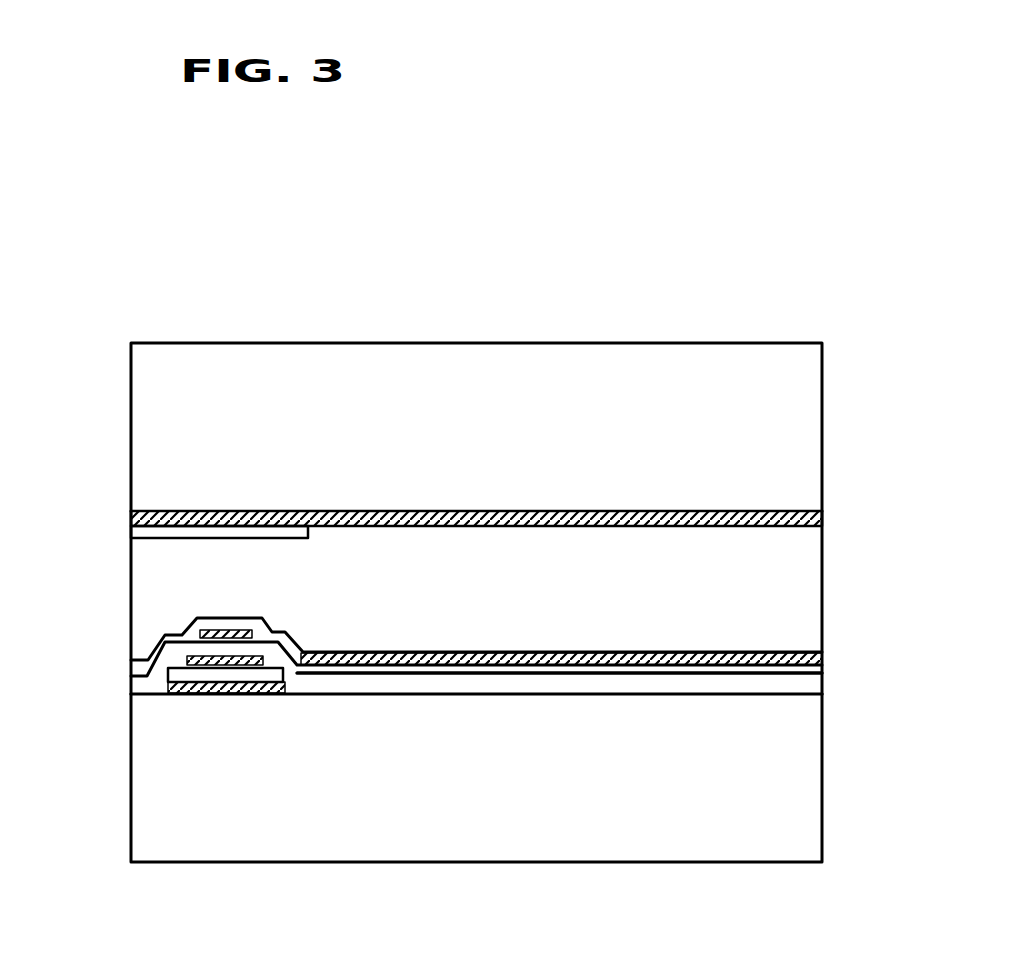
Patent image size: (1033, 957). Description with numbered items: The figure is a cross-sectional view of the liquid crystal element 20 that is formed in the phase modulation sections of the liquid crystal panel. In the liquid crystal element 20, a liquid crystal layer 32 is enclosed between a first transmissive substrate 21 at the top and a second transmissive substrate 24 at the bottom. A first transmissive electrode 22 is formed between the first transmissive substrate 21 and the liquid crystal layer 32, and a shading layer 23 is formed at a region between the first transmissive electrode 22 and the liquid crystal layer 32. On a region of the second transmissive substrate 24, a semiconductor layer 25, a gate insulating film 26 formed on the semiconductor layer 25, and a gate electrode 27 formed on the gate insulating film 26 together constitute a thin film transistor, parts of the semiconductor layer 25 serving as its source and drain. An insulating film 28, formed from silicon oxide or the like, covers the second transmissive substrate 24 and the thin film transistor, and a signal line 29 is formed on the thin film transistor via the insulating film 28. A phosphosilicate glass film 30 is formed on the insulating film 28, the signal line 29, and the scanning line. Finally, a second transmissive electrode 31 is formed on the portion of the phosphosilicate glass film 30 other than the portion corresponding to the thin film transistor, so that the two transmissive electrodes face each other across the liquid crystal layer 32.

The liquid crystal element 20 is at (231, 303).
The first transmissive substrate 21 is at (327, 362).
The first transmissive electrode 22 is at (768, 508).
The shading layer 23 is at (163, 538).
The second transmissive substrate 24 is at (227, 843).
The semiconductor layer 25 is at (188, 698).
The gate insulating film 26 is at (283, 674).
The gate electrode 27 is at (185, 661).
The insulating film 28 is at (782, 687).
The signal line 29 is at (205, 623).
The phosphosilicate glass film 30 is at (577, 670).
The second transmissive electrode 31 is at (768, 653).
The liquid crystal layer 32 is at (578, 540).